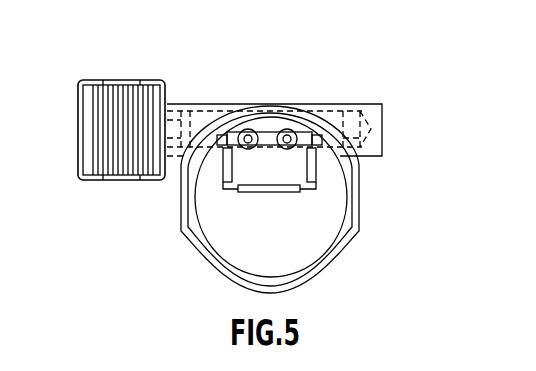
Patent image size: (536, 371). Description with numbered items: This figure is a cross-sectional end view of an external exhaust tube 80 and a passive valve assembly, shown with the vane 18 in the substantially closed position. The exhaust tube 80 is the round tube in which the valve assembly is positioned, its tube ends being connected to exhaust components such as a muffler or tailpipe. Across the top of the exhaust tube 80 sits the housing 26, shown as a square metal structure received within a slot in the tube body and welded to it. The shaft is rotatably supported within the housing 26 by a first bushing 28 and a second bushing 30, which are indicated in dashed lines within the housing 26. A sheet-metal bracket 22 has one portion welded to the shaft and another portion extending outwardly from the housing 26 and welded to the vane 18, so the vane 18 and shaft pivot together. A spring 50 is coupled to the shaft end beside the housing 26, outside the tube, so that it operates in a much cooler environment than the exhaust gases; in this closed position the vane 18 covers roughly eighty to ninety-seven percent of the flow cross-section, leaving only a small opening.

The vane 18 is at (221, 223).
The bracket 22 is at (240, 165).
The housing 26 is at (226, 105).
The first bushing 28 is at (370, 105).
The second bushing 30 is at (177, 104).
The spring 50 is at (117, 85).
The exhaust tube 80 is at (327, 268).